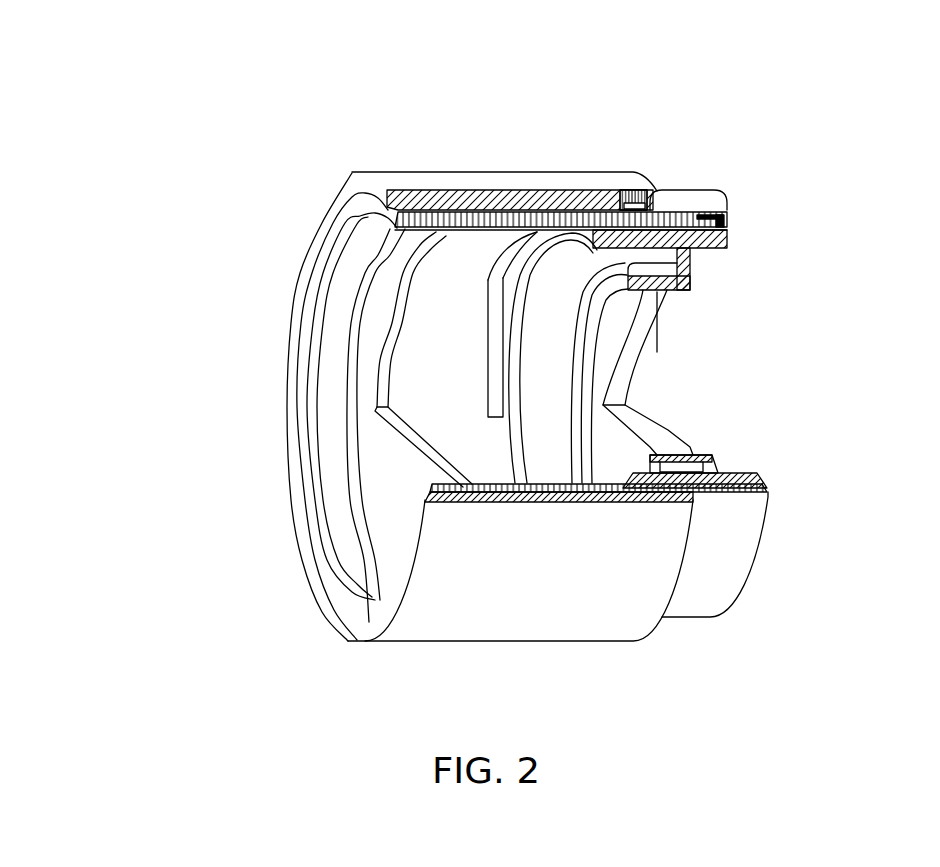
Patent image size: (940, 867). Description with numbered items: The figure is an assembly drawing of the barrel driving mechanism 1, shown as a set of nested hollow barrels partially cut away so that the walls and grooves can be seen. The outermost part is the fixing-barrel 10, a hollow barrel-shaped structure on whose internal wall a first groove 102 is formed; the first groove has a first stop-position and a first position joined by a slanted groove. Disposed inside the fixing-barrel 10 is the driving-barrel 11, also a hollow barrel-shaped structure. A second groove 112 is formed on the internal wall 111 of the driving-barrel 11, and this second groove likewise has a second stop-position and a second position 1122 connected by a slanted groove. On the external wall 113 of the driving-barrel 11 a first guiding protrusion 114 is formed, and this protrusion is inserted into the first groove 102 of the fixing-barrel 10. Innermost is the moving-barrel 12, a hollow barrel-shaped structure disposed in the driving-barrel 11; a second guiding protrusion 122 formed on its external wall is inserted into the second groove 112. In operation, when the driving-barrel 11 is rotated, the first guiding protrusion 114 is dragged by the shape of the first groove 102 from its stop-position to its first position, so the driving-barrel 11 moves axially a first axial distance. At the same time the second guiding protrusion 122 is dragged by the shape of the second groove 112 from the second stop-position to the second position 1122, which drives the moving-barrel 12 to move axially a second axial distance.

The barrel driving mechanism 1 is at (134, 104).
The fixing-barrel 10 is at (362, 632).
The driving-barrel 11 is at (730, 487).
The moving-barrel 12 is at (760, 477).
The first groove 102 is at (620, 203).
The internal wall 111 is at (343, 281).
The second groove 112 is at (700, 221).
The external wall 113 is at (725, 557).
The first guiding protrusion 114 is at (637, 200).
The second guiding protrusion 122 is at (702, 218).
The second position 1122 is at (493, 345).